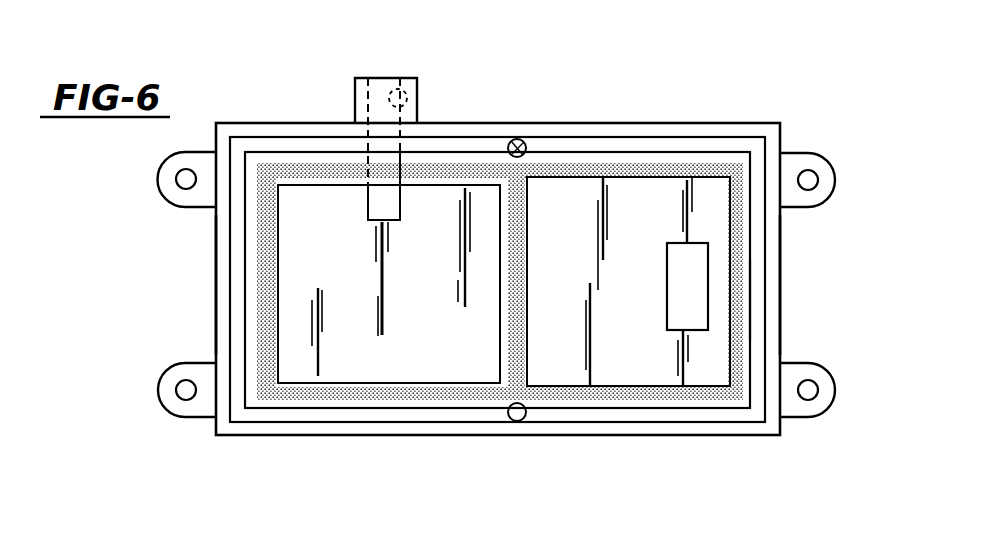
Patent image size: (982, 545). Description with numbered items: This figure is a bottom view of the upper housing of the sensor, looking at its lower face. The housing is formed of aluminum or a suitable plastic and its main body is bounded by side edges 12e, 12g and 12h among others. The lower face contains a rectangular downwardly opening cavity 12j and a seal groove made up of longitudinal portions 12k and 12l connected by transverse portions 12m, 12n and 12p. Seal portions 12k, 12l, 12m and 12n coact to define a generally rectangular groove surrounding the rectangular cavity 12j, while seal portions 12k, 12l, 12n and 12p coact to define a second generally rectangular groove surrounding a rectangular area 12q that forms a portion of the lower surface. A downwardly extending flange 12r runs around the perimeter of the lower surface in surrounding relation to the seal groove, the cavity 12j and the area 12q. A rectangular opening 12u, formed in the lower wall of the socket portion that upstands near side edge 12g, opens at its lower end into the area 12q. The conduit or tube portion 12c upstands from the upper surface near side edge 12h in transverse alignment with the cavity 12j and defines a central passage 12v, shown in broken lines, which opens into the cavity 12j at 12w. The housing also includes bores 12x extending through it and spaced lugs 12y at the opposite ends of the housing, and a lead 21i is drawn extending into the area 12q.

The conduit or tube portion 12c is at (355, 107).
The side edge 12e is at (216, 290).
The side edge 12g is at (780, 250).
The side edge 12h is at (605, 123).
The rectangular cavity 12j is at (428, 184).
The longitudinal seal groove portion 12k is at (313, 168).
The longitudinal seal groove portion 12l is at (405, 390).
The transverse seal groove portion 12m is at (268, 320).
The transverse seal groove portion 12n is at (516, 327).
The transverse seal groove portion 12p is at (740, 308).
The rectangular area 12q is at (572, 264).
The downwardly extending flange 12r is at (270, 137).
The rectangular opening 12u is at (678, 330).
The central passage 12v is at (410, 90).
The passage opening 12w is at (388, 219).
The bores 12x is at (512, 140).
The lugs 12y is at (157, 198).
The conductor lead 21i is at (631, 216).